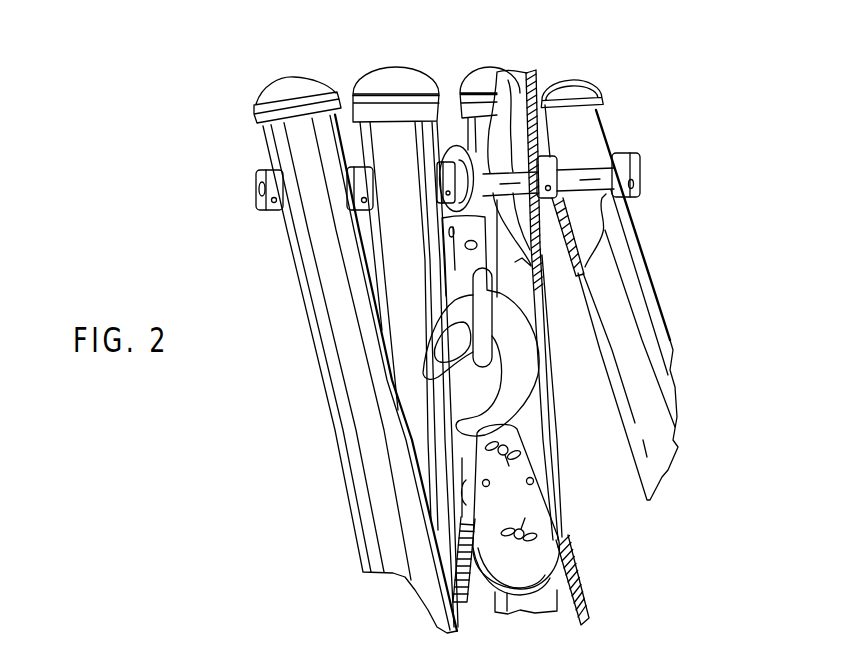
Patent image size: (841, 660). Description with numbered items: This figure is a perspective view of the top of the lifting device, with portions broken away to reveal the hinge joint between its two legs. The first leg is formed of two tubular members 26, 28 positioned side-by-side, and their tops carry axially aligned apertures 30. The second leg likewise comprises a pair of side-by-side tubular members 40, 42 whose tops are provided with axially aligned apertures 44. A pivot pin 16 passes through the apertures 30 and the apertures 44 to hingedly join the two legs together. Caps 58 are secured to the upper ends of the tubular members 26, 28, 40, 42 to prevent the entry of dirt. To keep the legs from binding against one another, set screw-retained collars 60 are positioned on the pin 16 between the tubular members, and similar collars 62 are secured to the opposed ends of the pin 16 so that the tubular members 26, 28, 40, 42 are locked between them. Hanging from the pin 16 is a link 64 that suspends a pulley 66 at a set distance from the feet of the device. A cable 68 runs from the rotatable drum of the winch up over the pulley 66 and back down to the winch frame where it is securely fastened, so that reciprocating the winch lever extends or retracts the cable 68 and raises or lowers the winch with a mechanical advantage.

The pivot pin 16 is at (585, 168).
The tubular member 26 is at (657, 308).
The tubular member 28 is at (327, 398).
The apertures 30 is at (612, 202).
The tubular member 40 is at (556, 434).
The tubular member 42 is at (432, 439).
The apertures 44 is at (519, 162).
The caps 58 is at (483, 72).
The set screw-retained collars 60 is at (448, 237).
The collars 62 is at (256, 178).
The link 64 is at (450, 292).
The pulley 66 is at (543, 507).
The cable 68 is at (586, 589).